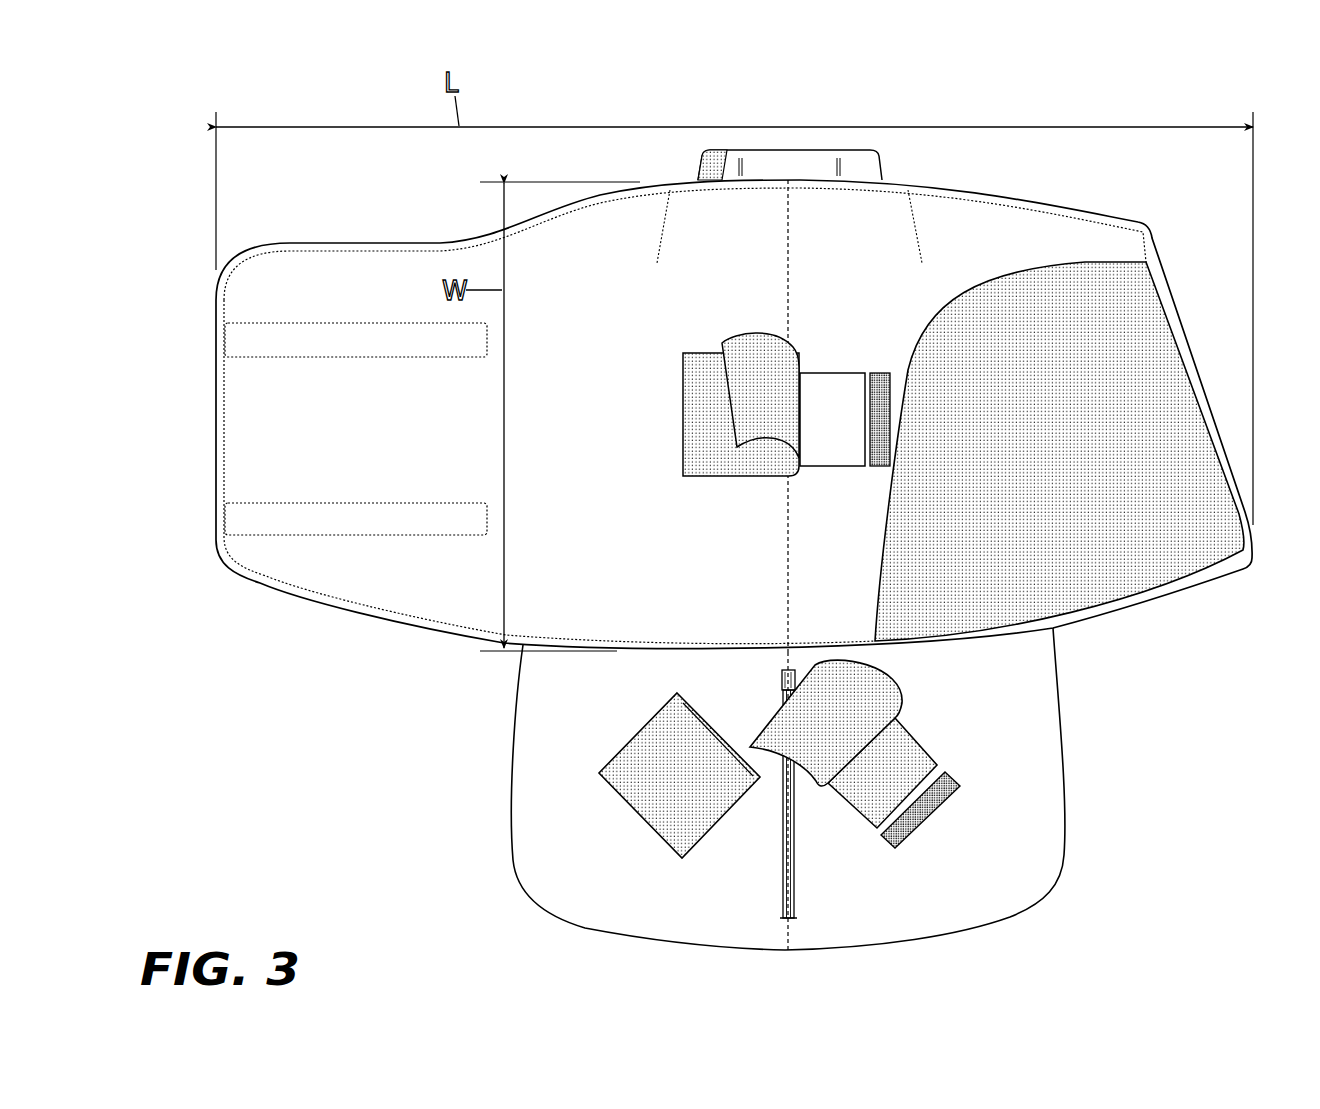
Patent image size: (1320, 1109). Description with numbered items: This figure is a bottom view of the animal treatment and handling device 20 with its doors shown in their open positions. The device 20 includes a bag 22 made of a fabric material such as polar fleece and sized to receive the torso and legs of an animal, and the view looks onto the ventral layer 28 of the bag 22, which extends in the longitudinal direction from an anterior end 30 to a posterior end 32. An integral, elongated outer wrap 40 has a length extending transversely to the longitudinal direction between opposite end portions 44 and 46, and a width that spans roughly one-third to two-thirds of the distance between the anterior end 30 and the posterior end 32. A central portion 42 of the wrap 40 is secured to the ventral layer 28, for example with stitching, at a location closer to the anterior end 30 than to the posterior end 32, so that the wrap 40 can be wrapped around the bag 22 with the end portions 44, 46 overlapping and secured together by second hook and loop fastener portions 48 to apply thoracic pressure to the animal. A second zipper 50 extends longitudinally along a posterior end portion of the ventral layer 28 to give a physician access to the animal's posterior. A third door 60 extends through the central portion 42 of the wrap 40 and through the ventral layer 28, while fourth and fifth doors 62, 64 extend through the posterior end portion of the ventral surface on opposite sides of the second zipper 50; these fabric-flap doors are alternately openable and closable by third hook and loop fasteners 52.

The animal treatment and handling device 20 is at (1152, 736).
The bag 22 is at (1048, 856).
The ventral layer 28 is at (677, 801).
The anterior end 30 is at (906, 172).
The posterior end 32 is at (527, 935).
The outer wrap 40 is at (687, 416).
The central portion 42 is at (852, 250).
The end portion 44 is at (1176, 312).
The end portion 46 is at (253, 288).
The second hook and loop fastener portions 48 is at (243, 341).
The second zipper 50 is at (795, 852).
The third hook and loop fasteners 52 is at (922, 820).
The third door 60 is at (840, 366).
The fourth door 62 is at (637, 815).
The fifth door 64 is at (928, 741).